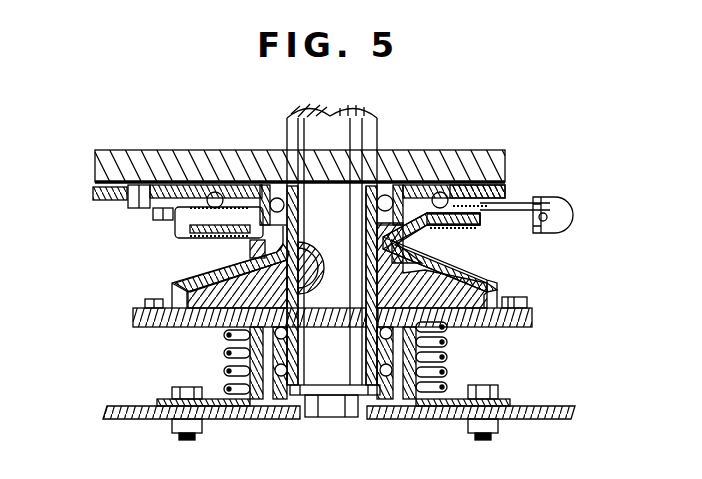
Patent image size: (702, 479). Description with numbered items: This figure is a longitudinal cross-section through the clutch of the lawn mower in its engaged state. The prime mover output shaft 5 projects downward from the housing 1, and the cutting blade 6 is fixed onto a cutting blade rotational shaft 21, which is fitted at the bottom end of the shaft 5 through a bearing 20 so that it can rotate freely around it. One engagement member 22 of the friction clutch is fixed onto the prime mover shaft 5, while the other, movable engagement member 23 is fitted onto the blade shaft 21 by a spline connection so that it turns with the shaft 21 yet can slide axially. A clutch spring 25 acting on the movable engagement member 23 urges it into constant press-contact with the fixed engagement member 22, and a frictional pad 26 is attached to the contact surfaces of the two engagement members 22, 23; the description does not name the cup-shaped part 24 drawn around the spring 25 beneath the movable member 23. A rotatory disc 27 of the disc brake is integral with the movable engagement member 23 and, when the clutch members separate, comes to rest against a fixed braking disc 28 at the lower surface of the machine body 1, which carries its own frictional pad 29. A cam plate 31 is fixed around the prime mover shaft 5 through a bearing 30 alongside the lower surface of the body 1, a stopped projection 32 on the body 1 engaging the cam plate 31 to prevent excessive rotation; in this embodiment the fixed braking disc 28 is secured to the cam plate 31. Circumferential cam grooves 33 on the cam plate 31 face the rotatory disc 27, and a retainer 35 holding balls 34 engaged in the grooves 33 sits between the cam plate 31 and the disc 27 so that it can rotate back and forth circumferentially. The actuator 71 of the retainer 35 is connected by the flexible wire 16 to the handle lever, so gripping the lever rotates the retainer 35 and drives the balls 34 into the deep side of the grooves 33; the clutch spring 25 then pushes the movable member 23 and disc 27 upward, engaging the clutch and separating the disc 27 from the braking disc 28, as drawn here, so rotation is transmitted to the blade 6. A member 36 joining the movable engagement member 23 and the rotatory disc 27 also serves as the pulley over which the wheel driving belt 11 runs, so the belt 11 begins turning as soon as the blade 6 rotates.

The housing 1 is at (501, 170).
The output shaft 5 is at (282, 120).
The cutting blade 6 is at (546, 419).
The V-shaped belt 11 is at (248, 250).
The flexible wire 16 is at (545, 215).
The bearing 20 is at (387, 392).
The cutting blade rotational shaft 21 is at (289, 417).
The engagement member 22 is at (172, 297).
The movable engagement member 23 is at (152, 328).
The cup 24 is at (250, 404).
The clutch spring 25 is at (223, 350).
The frictional pad 26 is at (479, 328).
The rotatory disc 27 is at (483, 213).
The fixed braking disc 28 is at (483, 245).
The frictional pad 29 is at (427, 240).
The bearing 30 is at (389, 195).
The cam plate 31 is at (495, 188).
The stopped projection 32 is at (137, 203).
The cam grooves 33 is at (221, 192).
The balls 34 is at (211, 192).
The retainer 35 is at (176, 207).
The connecting member 36 is at (178, 279).
The actuator 71 is at (570, 206).